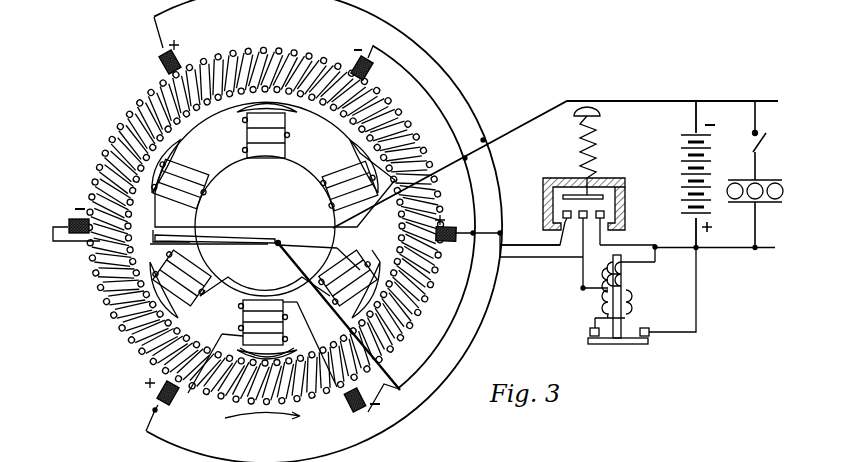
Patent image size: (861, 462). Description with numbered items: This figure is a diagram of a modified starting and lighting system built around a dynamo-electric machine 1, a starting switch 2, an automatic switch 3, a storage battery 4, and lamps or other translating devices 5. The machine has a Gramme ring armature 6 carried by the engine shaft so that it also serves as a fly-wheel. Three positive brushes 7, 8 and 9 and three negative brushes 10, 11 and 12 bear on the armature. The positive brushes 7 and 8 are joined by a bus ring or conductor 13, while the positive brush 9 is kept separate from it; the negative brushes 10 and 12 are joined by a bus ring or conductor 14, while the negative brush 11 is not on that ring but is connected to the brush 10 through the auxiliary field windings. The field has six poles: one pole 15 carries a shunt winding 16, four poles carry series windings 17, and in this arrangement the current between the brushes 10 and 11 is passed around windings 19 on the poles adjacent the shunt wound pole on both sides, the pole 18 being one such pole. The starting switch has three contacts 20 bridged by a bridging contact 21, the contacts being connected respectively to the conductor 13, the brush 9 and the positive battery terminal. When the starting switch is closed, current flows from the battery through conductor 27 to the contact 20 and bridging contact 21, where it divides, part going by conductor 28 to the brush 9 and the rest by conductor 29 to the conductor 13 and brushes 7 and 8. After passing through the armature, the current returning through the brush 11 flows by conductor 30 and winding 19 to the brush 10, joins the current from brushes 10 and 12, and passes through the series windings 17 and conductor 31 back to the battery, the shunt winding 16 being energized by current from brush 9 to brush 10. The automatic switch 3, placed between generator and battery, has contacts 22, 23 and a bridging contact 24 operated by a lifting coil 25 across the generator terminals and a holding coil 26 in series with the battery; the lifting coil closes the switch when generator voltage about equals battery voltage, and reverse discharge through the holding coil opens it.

The dynamo-electric machine 1 is at (272, 231).
The starting switch 2 is at (584, 168).
The automatic switch 3 is at (635, 296).
The storage battery 4 is at (704, 174).
The lamps or other translating devices 5 is at (764, 202).
The Gramme ring armature 6 is at (224, 98).
The positive brush 7 is at (182, 66).
The positive brush 8 is at (452, 232).
The positive brush 9 is at (176, 398).
The negative brush 10 is at (348, 404).
The negative brush 11 is at (72, 222).
The negative brush 12 is at (318, 102).
The bus ring or conductor 13 is at (455, 86).
The bus ring or conductor 14 is at (462, 296).
The shunt wound pole 15 is at (290, 308).
The shunt winding 16 is at (244, 318).
The series windings 17 is at (226, 166).
The field pole 18 is at (376, 268).
The winding 19 is at (203, 294).
The contacts 20 is at (560, 208).
The bridging contact 21 is at (573, 193).
The contact 22 is at (589, 330).
The contact 23 is at (651, 331).
The bridging contact 24 is at (640, 345).
The lifting coil 25 is at (640, 270).
The holding coil 26 is at (604, 303).
The conductor 27 is at (646, 241).
The conductor 28 is at (490, 300).
The conductor 29 is at (521, 244).
The conductor 30 is at (272, 246).
The conductor 31 is at (594, 100).